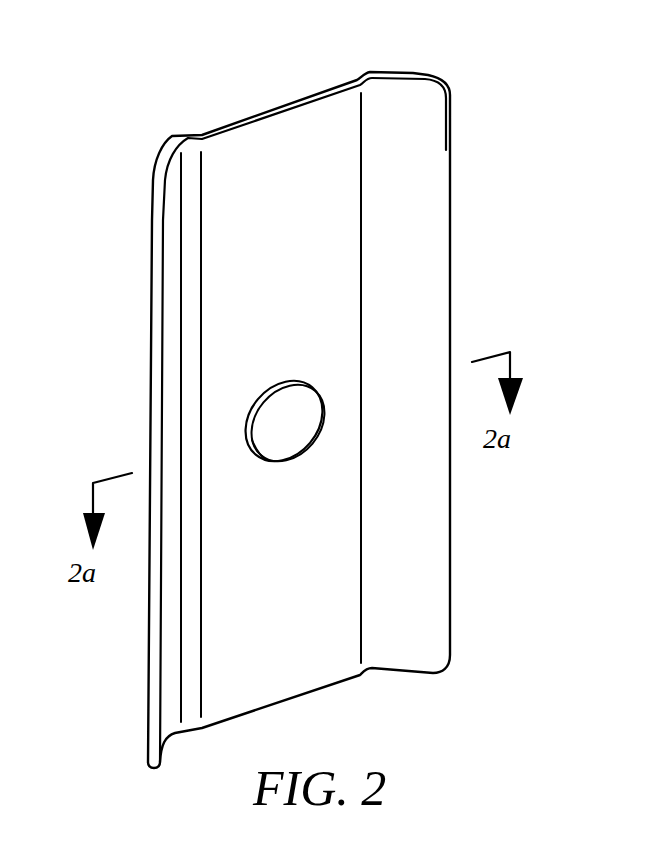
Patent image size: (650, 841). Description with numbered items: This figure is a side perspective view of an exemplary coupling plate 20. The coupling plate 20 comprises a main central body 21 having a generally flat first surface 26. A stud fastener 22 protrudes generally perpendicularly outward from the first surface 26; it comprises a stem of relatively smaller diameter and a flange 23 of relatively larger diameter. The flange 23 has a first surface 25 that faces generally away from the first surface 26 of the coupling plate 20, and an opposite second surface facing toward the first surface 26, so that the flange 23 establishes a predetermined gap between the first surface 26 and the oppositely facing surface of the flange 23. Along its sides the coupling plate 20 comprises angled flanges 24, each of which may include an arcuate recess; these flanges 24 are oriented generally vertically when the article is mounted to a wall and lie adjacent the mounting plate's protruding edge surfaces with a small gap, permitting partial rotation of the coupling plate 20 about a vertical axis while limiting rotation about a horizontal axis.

The coupling plate 20 is at (133, 52).
The main central body 21 is at (263, 112).
The stud fastener 22 is at (267, 460).
The flange 23 is at (297, 395).
The angled flanges 24 is at (162, 150).
The first surface of flange 25 is at (292, 428).
The first surface 26 is at (295, 255).